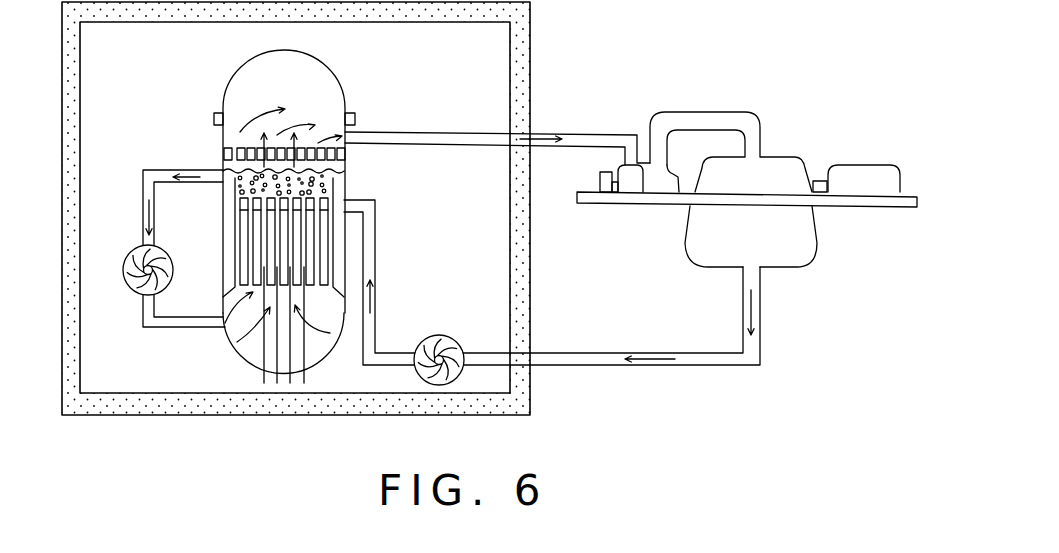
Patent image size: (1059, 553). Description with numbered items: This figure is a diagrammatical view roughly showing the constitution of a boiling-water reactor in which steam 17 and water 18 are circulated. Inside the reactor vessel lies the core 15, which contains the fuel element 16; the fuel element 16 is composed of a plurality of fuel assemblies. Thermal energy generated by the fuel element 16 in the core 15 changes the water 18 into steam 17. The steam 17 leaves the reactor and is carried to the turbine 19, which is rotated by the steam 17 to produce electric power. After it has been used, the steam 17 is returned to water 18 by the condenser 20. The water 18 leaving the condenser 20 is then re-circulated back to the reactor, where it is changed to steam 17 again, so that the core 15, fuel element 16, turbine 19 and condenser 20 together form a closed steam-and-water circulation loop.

The core 15 is at (263, 352).
The fuel element 16 is at (240, 250).
The steam 17 is at (300, 112).
The water 18 is at (668, 367).
The turbine 19 is at (689, 120).
The condenser 20 is at (782, 252).